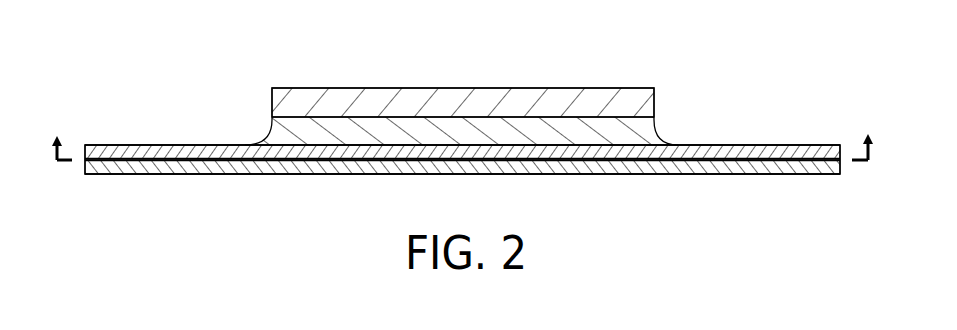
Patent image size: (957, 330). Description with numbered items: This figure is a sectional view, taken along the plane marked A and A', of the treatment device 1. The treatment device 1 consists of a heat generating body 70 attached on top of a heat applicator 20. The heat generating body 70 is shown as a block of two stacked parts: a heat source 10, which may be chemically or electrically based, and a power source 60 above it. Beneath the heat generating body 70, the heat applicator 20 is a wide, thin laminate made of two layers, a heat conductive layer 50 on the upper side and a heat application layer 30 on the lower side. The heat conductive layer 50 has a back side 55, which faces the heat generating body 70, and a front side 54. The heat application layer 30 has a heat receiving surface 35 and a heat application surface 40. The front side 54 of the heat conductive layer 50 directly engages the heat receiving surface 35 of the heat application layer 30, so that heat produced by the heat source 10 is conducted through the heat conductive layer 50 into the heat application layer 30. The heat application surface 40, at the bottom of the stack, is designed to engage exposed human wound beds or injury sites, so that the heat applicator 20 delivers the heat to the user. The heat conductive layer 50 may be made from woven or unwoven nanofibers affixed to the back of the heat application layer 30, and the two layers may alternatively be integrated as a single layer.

The treatment device 1 is at (192, 33).
The heat source 10 is at (282, 135).
The heat applicator 20 is at (458, 170).
The heat application layer 30 is at (458, 199).
The heat receiving surface 35 is at (458, 186).
The heat application surface 40 is at (225, 175).
The heat conductive layer 50 is at (462, 121).
The front side 54 is at (120, 160).
The back side 55 is at (180, 145).
The power source 60 is at (285, 100).
The heat generating body 70 is at (462, 76).